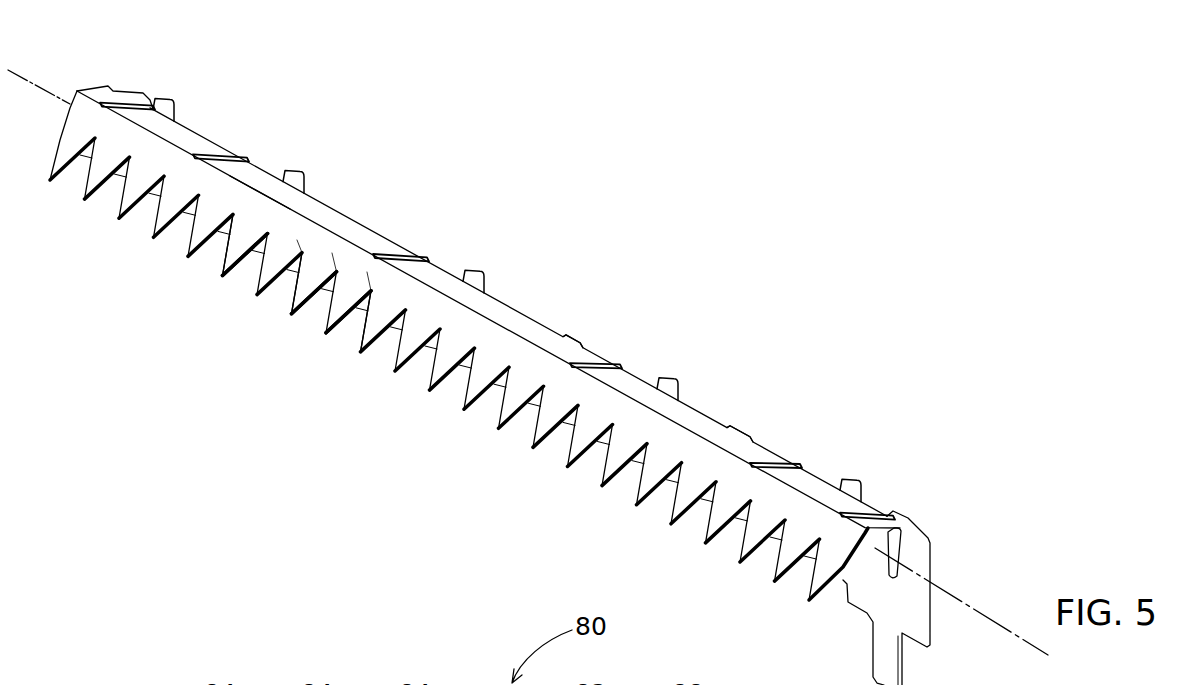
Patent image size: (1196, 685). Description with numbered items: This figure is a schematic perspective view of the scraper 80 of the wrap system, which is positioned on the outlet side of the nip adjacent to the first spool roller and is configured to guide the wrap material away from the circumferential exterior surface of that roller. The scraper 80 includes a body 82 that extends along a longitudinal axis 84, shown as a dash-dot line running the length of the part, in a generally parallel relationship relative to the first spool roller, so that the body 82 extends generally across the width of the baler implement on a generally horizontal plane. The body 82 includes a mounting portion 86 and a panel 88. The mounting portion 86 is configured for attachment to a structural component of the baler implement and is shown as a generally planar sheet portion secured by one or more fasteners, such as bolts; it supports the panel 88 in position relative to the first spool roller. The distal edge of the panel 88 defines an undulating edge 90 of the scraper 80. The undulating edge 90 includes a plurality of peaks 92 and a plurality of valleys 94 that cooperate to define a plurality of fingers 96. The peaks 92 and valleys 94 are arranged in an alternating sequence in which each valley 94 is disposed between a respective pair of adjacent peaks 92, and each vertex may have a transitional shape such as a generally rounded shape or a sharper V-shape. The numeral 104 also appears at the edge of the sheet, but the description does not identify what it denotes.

The scraper 80 is at (490, 385).
The body 82 is at (578, 341).
The longitudinal axis 84 is at (996, 604).
The mounting portion 86 is at (757, 434).
The panel 88 is at (262, 224).
The undulating edge 90 is at (165, 236).
The peaks 92 is at (223, 277).
The valleys 94 is at (297, 237).
The fingers 96 is at (238, 274).
The guide member 104 is at (39, 684).